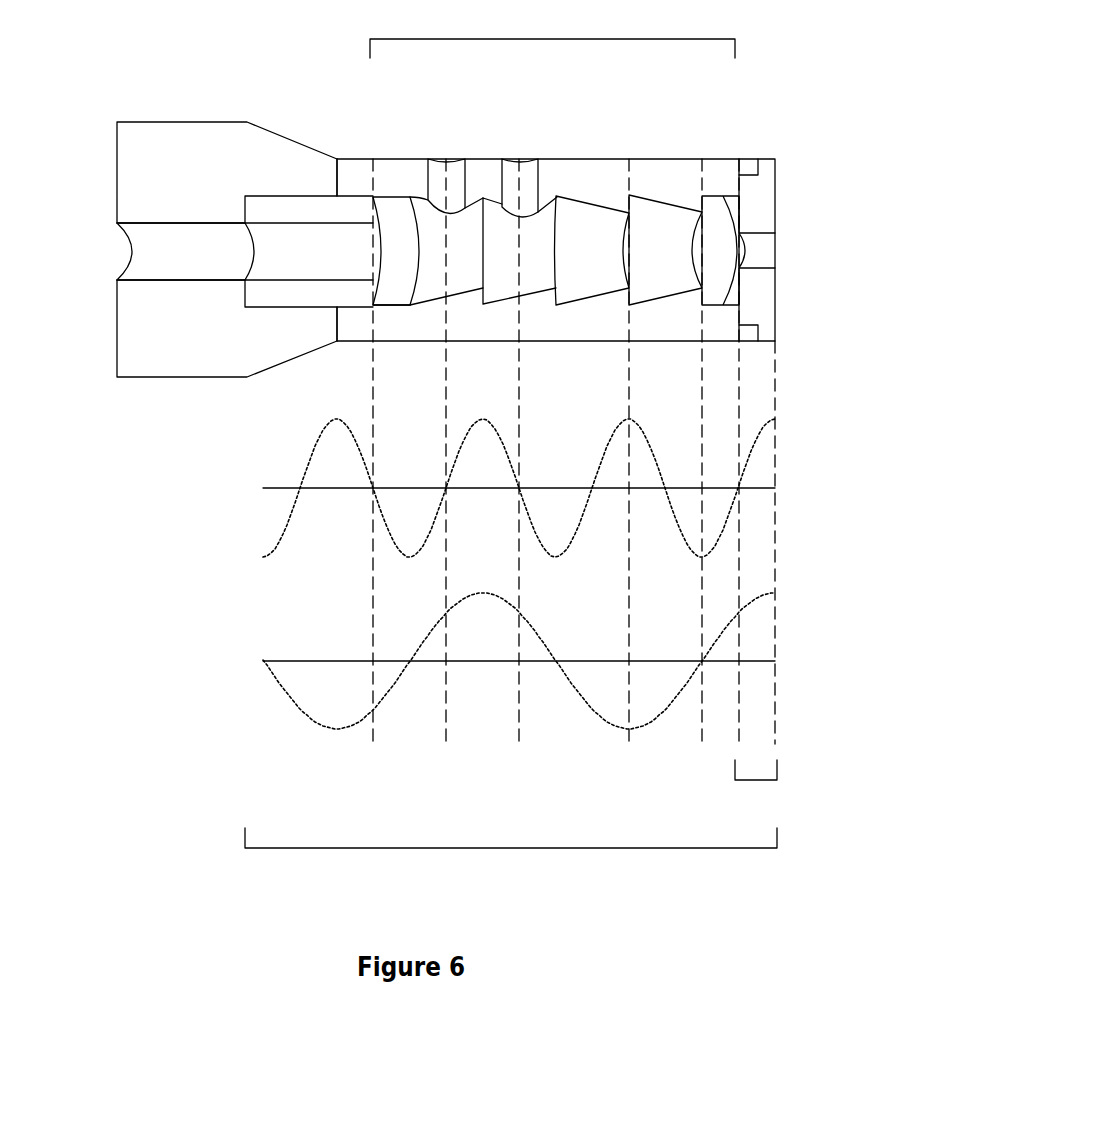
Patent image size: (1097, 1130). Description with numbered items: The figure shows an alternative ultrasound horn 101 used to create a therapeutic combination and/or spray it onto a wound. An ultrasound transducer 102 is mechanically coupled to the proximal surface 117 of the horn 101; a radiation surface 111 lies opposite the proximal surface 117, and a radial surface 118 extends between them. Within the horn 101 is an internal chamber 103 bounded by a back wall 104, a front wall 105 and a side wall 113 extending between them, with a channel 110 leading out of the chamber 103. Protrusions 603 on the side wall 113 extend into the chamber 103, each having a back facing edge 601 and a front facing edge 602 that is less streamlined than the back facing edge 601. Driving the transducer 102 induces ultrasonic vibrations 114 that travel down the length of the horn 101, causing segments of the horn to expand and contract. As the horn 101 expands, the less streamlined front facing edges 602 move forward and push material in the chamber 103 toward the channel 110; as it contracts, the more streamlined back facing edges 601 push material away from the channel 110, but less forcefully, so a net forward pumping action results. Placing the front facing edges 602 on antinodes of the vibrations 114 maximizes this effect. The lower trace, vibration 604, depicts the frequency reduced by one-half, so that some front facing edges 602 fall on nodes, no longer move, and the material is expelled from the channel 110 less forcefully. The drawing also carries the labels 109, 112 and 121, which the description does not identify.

The ultrasound horn 101 is at (558, 848).
The ultrasound transducer 102 is at (188, 190).
The internal chamber 103 is at (648, 39).
The back wall 104 is at (377, 203).
The front wall 105 is at (733, 222).
The housing slots 109 is at (519, 172).
The channel 110 is at (763, 247).
The radiation surface 111 is at (776, 185).
The end cap section 112 is at (756, 780).
The side wall 113 is at (395, 307).
The ultrasonic vibrations 114 is at (312, 453).
The proximal surface 117 is at (245, 280).
The radial surface 118 is at (347, 160).
The fiber bore 121 is at (215, 267).
The back facing edge 601 is at (508, 300).
The front facing edge 602 is at (557, 299).
The protrusion 603 is at (542, 297).
The vibration 604 is at (430, 633).